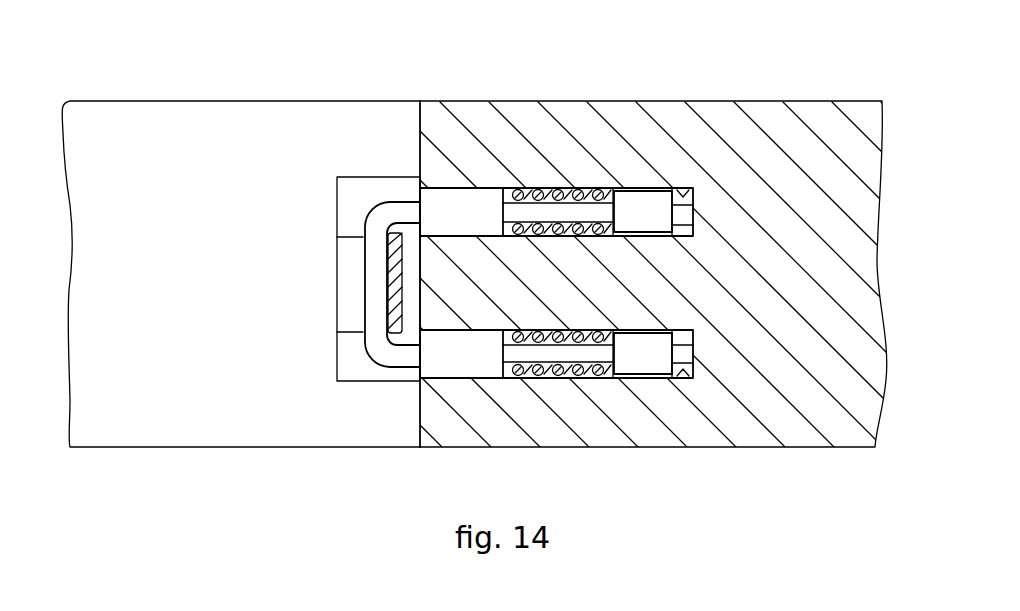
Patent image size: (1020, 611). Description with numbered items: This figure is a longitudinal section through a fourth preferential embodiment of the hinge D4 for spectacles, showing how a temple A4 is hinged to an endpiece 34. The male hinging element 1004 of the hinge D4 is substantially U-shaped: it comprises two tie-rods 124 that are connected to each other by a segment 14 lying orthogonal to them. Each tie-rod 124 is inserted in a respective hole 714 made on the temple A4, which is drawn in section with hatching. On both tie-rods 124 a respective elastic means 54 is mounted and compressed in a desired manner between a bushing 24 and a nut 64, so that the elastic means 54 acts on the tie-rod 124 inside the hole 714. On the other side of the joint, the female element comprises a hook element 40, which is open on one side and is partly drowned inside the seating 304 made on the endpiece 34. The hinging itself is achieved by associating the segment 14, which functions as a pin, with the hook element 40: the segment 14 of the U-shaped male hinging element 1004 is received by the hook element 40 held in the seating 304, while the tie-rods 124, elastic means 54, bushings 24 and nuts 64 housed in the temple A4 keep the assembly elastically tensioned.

The endpiece 34 is at (135, 423).
The temple A4 is at (862, 263).
The hinge D4 is at (396, 140).
The male hinging element 1004 is at (549, 156).
The seating 304 is at (342, 201).
The segment 14 is at (375, 307).
The hook element 40 is at (390, 251).
The bushing 24 is at (372, 422).
The elastic means 54 is at (516, 190).
The tie-rod 124 is at (598, 212).
The nut 64 is at (640, 227).
The hole 714 is at (684, 192).